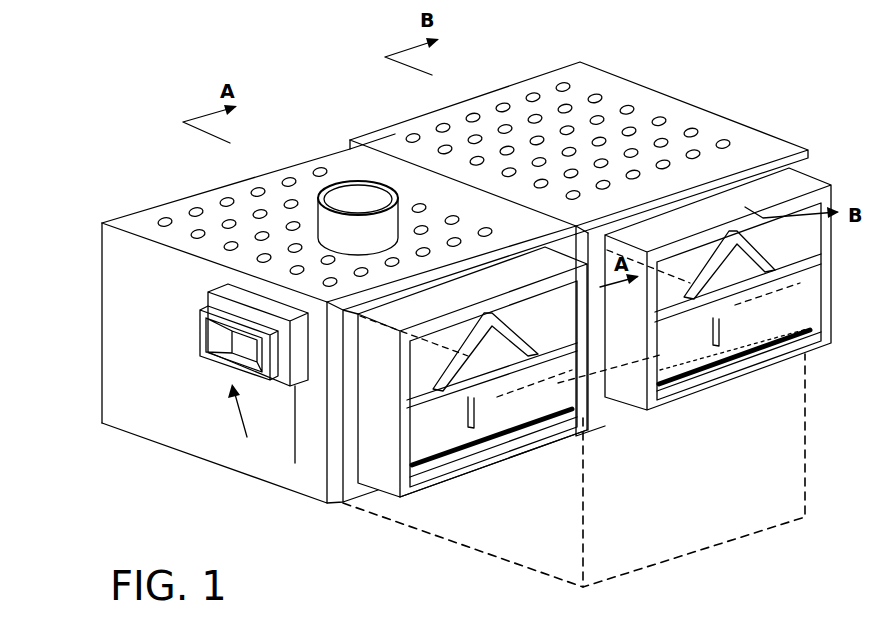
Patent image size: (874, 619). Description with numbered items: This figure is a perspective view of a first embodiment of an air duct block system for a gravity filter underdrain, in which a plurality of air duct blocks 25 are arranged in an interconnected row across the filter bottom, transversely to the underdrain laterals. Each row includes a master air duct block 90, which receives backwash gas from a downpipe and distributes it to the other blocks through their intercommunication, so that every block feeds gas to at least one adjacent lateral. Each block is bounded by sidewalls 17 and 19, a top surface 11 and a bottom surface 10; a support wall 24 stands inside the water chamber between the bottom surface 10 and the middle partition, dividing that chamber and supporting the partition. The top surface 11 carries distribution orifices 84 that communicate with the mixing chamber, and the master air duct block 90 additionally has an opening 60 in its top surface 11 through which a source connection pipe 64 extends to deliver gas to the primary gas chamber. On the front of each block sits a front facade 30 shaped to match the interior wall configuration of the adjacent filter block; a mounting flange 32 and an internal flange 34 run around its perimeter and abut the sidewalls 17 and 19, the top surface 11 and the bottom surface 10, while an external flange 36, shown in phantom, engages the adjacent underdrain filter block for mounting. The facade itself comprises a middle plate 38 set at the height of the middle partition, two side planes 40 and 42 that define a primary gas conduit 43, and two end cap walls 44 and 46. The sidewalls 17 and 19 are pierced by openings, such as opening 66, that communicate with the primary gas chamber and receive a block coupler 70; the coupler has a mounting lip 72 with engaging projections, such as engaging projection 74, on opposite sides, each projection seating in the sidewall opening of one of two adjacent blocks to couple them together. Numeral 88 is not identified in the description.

The bottom surface 10 is at (423, 432).
The top surface 11 is at (288, 172).
The sidewall 17 is at (368, 168).
The sidewall 19 is at (202, 425).
The support wall 24 is at (477, 413).
The air duct block 25 is at (338, 100).
The front facade 30 is at (339, 510).
The mounting flange 32 is at (335, 472).
The internal flange 34 is at (546, 428).
The external flange 36 is at (443, 478).
The middle plate 38 is at (585, 413).
The side plane 40 is at (420, 365).
The side plane 42 is at (547, 358).
The primary gas conduit 43 is at (488, 352).
The end cap wall 44 is at (468, 416).
The end cap wall 46 is at (533, 312).
The opening 60 is at (233, 267).
The source connection pipe 64 is at (350, 180).
The opening 66 is at (203, 320).
The block coupler 70 is at (252, 417).
The mounting lip 72 is at (308, 432).
The engaging projection 74 is at (208, 363).
The distribution orifices 84 is at (227, 202).
The perforations 88 is at (563, 87).
The master air duct block 90 is at (100, 222).